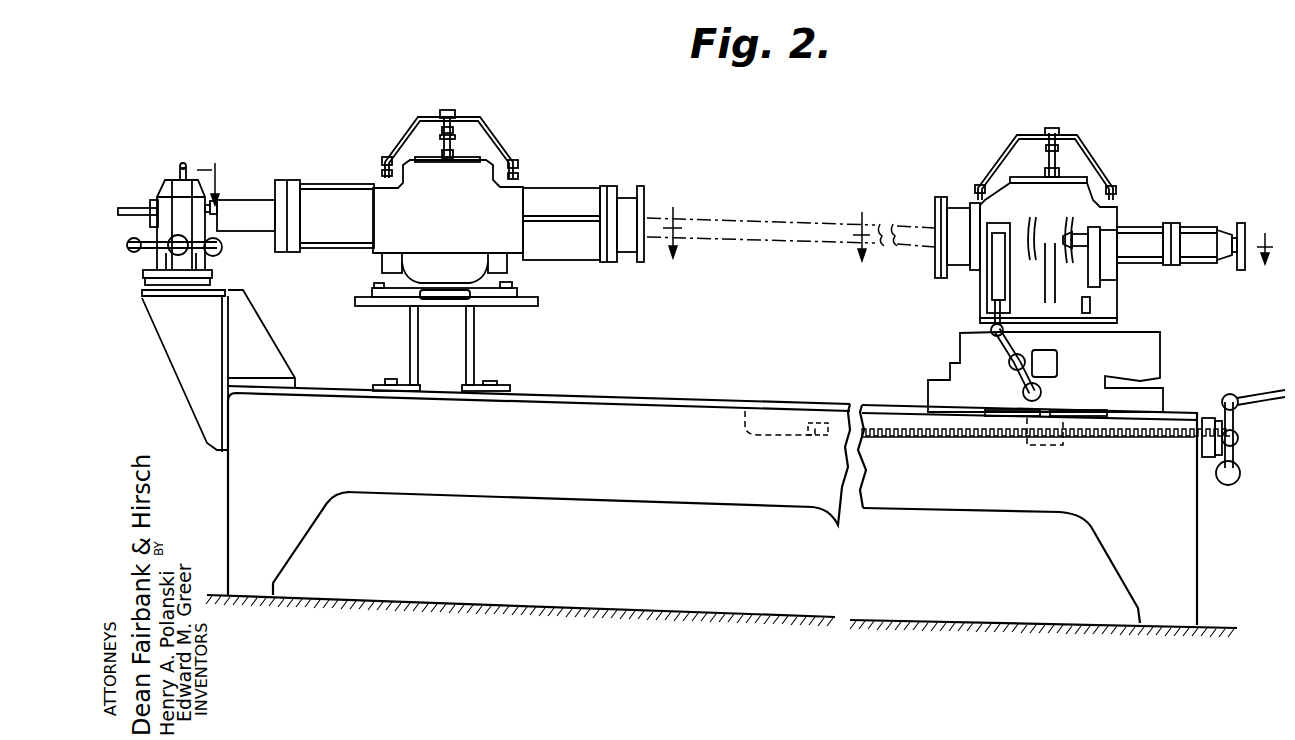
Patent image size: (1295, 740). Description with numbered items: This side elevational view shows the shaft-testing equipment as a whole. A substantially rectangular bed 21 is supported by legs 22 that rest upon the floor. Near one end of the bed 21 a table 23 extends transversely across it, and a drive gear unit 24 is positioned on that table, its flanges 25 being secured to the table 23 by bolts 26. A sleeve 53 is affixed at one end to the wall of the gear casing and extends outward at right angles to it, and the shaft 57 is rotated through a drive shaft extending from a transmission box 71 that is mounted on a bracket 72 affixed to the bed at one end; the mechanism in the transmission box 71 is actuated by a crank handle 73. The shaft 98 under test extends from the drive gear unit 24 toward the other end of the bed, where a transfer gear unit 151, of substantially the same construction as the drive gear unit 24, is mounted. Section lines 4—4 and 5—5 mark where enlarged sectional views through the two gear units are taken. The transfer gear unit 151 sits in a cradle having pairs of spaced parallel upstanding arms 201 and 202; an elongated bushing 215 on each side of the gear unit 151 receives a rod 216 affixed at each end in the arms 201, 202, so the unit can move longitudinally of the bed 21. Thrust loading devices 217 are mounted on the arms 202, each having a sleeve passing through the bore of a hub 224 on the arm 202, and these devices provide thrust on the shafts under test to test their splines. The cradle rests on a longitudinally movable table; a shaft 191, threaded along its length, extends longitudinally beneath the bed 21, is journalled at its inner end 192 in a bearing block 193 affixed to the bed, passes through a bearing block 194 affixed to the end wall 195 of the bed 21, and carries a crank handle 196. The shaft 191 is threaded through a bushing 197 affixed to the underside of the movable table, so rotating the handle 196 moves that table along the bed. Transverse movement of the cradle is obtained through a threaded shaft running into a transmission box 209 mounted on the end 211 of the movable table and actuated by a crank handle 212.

The section line 4— 4 is at (449, 202).
The section line 5— 5 is at (1067, 234).
The bed 21 is at (562, 480).
The legs 22 is at (285, 553).
The table 23 is at (476, 347).
The drive gear unit 24 is at (497, 207).
The flanges 25 is at (527, 301).
The bolts 26 is at (513, 285).
The sleeve 53 is at (340, 182).
The shaft 57 is at (247, 208).
The transmission box 71 is at (175, 185).
The bracket 72 is at (172, 373).
The crank handle 73 is at (142, 253).
The shaft under test 98 is at (765, 238).
The transfer gear unit 151 is at (1073, 200).
The threaded shaft 191 is at (932, 438).
The inner end 192 is at (808, 440).
The bearing block 193 is at (765, 437).
The bearing block 194 is at (1210, 477).
The end wall 195 is at (1195, 556).
The crank handle 196 is at (1253, 393).
The threaded bushing 197 is at (1043, 446).
The upstanding arm 201 is at (992, 268).
The upstanding arm 202 is at (1105, 277).
The transmission box 209 is at (1033, 344).
The end of table 211 is at (1080, 407).
The crank handle 212 is at (1000, 343).
The elongated bushing 215 is at (1083, 303).
The rod 216 is at (993, 315).
The thrust loading devices 217 is at (1203, 203).
The hub 224 is at (1093, 230).